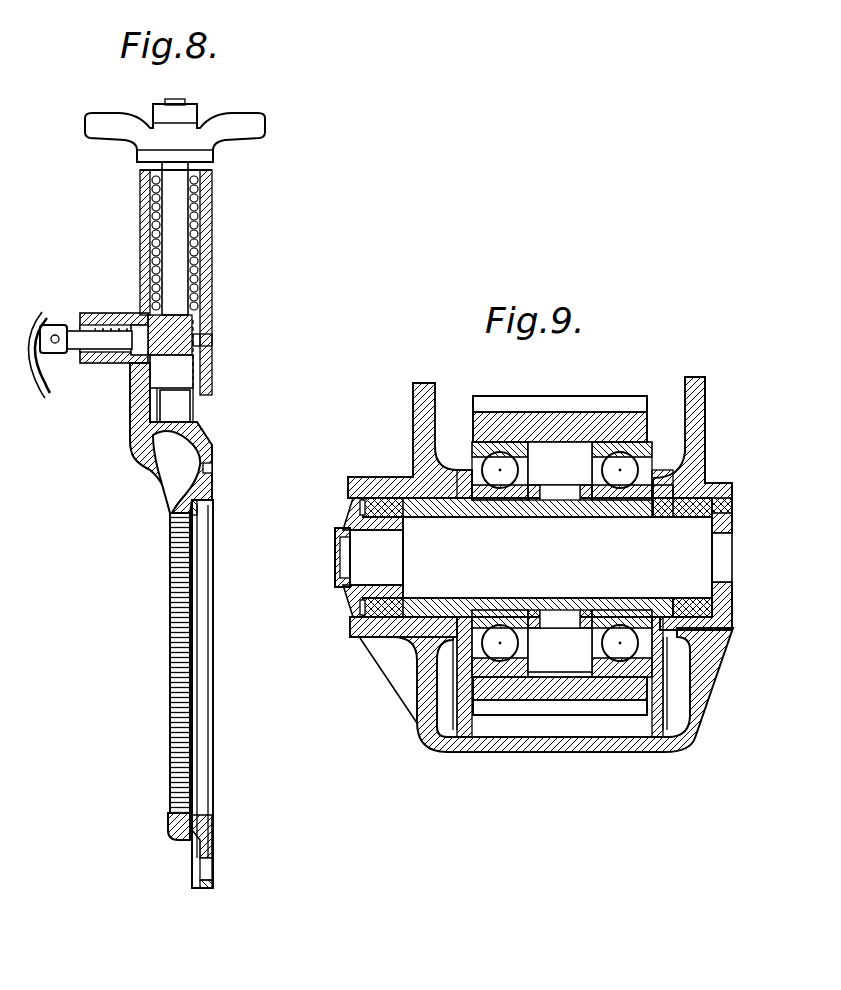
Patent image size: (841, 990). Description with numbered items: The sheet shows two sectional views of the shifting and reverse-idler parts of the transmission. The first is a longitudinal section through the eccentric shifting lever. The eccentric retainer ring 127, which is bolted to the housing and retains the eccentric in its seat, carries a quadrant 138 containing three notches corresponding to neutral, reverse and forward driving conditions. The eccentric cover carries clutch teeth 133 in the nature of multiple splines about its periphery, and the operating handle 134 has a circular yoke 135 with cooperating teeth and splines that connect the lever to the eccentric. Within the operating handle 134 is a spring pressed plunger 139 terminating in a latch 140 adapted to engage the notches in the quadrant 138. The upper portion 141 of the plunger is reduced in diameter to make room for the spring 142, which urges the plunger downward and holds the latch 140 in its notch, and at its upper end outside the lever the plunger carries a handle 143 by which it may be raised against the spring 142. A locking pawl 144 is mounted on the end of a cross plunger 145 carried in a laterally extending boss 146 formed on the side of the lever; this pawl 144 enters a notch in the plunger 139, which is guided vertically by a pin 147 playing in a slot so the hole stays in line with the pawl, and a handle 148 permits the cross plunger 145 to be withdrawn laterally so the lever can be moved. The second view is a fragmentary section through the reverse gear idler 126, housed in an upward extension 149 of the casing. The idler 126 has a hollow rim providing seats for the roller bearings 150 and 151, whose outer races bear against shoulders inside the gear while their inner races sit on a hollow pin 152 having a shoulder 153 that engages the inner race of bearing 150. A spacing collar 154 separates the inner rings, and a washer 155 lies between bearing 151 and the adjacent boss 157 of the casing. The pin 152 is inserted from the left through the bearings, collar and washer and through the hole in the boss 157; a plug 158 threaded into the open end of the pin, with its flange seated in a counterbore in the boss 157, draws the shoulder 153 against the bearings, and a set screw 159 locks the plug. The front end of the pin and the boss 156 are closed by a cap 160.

In FIG. 8, the handle 143 is at (105, 120).
In FIG. 8, the spring 142 is at (152, 201).
In FIG. 8, the upper portion of the plunger 141 is at (172, 220).
In FIG. 8, the operating handle 134 is at (146, 250).
In FIG. 8, the laterally extending boss 146 is at (92, 320).
In FIG. 8, the locking pawl 144 is at (138, 336).
In FIG. 8, the pin 147 is at (204, 338).
In FIG. 8, the spring pressed plunger 139 is at (178, 372).
In FIG. 8, the latch 140 is at (183, 407).
In FIG. 8, the quadrant 138 is at (203, 434).
In FIG. 8, the cross plunger 145 is at (70, 356).
In FIG. 8, the handle 148 is at (45, 393).
In FIG. 8, the clutch teeth 133 is at (182, 518).
In FIG. 8, the circular yoke 135 is at (172, 584).
In FIG. 8, the eccentric retainer ring 127 is at (210, 533).
In FIG. 9, the reverse gear idler 126 is at (565, 420).
In FIG. 9, the roller bearing 150 is at (495, 470).
In FIG. 9, the roller bearing 151 is at (624, 468).
In FIG. 9, the boss 156 is at (373, 477).
In FIG. 9, the boss 157 is at (707, 477).
In FIG. 9, the set screw 159 is at (733, 503).
In FIG. 9, the plug 158 is at (712, 530).
In FIG. 9, the cap 160 is at (334, 563).
In FIG. 9, the spacing collar 154 is at (537, 500).
In FIG. 9, the washer 155 is at (655, 503).
In FIG. 9, the hollow pin 152 is at (418, 598).
In FIG. 9, the shoulder 153 is at (474, 610).
In FIG. 9, the upward extension of the casing 149 is at (575, 745).